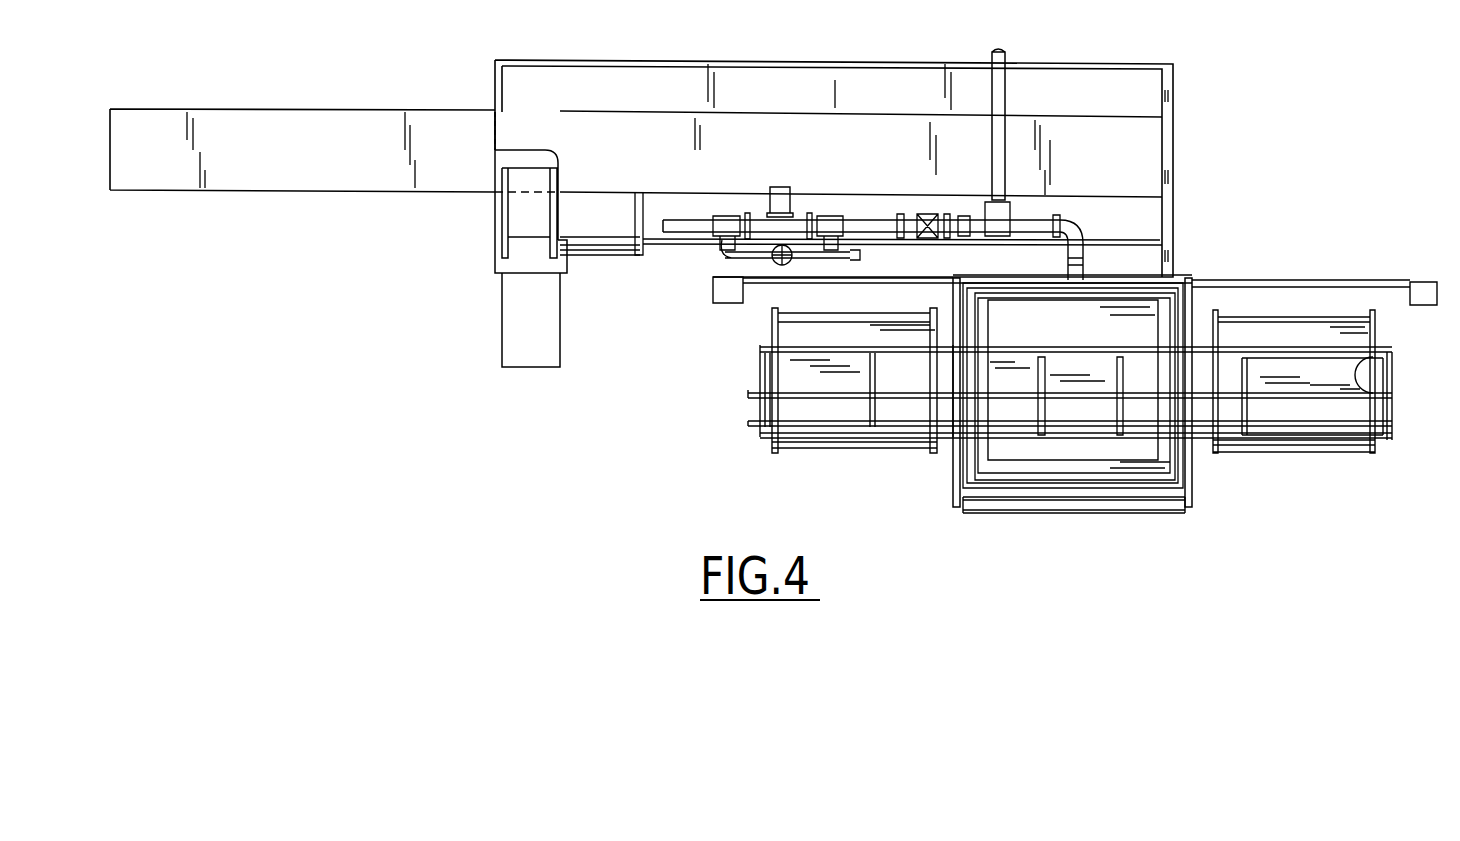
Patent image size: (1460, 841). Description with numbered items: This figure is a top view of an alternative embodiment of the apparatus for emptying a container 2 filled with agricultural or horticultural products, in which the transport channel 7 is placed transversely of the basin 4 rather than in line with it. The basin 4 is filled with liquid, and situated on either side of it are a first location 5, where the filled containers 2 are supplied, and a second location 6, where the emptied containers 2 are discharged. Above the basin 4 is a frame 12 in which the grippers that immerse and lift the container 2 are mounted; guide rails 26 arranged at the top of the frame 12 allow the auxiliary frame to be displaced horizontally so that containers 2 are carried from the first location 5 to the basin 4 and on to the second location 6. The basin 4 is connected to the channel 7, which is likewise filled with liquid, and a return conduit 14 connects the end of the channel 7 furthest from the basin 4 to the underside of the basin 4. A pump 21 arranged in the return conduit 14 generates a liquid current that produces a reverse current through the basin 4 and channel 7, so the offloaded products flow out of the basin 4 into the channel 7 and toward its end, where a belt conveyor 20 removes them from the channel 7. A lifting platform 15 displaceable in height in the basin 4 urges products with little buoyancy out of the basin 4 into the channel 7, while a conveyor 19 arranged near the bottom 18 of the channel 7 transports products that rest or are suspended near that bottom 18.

The container 2 is at (1350, 338).
The basin 4 is at (1074, 395).
The first location 5 is at (858, 453).
The second location 6 is at (1315, 407).
The transport channel 7 is at (1100, 95).
The frame 12 is at (1192, 482).
The return conduit 14 is at (1040, 222).
The lifting platform 15 is at (1120, 322).
The bottom of channel 18 is at (1135, 222).
The conveyor 19 is at (1132, 145).
The belt conveyor 20 is at (291, 172).
The pump 21 is at (782, 203).
The guide rails 26 is at (1373, 388).